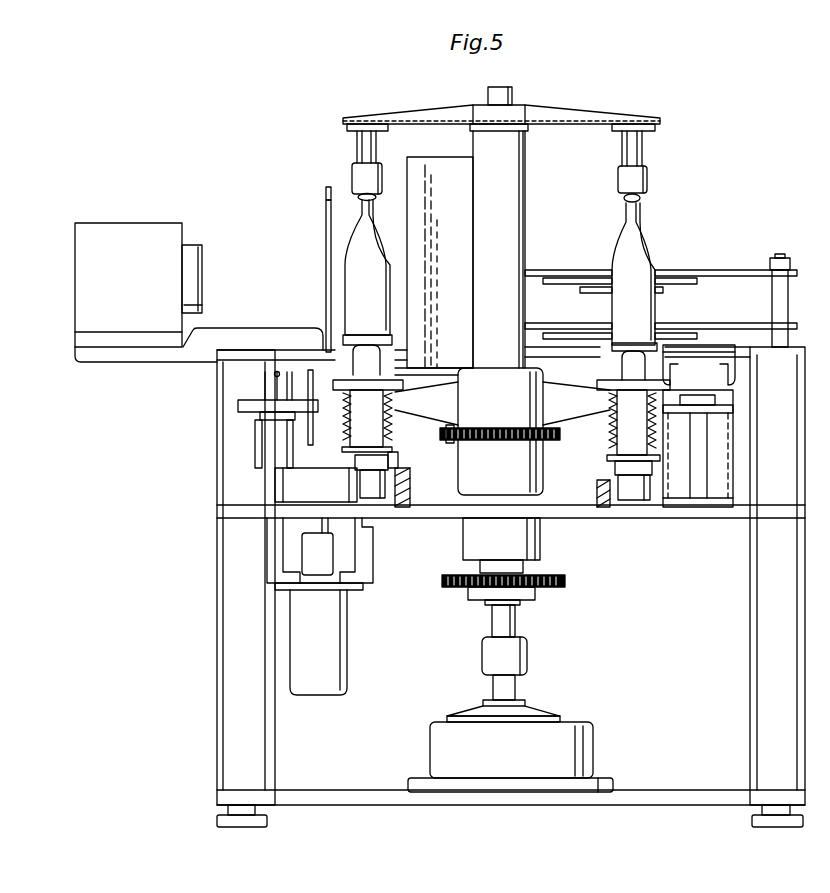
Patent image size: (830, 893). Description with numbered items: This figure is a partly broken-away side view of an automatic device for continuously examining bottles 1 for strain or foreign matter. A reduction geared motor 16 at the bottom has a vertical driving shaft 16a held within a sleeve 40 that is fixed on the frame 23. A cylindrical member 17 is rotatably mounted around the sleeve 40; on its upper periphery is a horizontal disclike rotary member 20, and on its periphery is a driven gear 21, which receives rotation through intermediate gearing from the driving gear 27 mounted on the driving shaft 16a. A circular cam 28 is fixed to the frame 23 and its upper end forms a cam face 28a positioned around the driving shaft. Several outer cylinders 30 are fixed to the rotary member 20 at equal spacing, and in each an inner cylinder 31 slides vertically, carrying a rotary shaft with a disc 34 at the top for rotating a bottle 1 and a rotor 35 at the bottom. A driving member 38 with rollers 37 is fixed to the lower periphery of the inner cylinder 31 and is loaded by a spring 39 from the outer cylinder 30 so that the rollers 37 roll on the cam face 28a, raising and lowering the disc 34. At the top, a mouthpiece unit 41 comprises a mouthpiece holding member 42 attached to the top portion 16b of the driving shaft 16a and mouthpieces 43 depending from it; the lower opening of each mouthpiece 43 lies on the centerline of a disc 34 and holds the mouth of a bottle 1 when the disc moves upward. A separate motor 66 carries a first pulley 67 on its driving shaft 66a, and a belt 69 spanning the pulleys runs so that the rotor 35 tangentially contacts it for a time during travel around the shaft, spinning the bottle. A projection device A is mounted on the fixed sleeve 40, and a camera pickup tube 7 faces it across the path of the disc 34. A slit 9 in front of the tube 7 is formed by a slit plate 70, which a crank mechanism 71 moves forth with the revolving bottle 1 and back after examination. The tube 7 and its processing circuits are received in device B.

The bottle 1 is at (500, 272).
The camera pickup tube 7 is at (202, 268).
The slit 9 is at (326, 234).
The reduction geared motor 16 is at (510, 746).
The driving shaft 16a is at (496, 617).
The top portion of the driving shaft 16b is at (512, 88).
The cylindrical member 17 is at (502, 431).
The disclike rotary member 20 is at (439, 371).
The driven gear 21 is at (498, 440).
The frame 23 is at (216, 541).
The driving gear 27 is at (557, 585).
The circular cam 28 is at (415, 518).
The cam face 28a is at (592, 472).
The outer cylinder 30 is at (501, 417).
The inner cylinder 31 is at (351, 458).
The disc 34 is at (365, 338).
The rotor 35 is at (356, 481).
The rollers 37 is at (397, 458).
The driving member 38 is at (397, 448).
The spring 39 is at (344, 412).
The sleeve 40 is at (499, 246).
The mouthpiece unit 41 is at (649, 150).
The mouthpiece holding member 42 is at (586, 108).
The mouthpiece 43 is at (647, 181).
The motor 66 is at (319, 639).
The driving shaft of the motor 66a is at (323, 523).
The first pulley 67 is at (284, 452).
The belt 69 is at (316, 485).
The slit plate 70 is at (326, 197).
The crank mechanism 71 is at (297, 421).
The projection device A is at (440, 262).
The device B is at (199, 292).